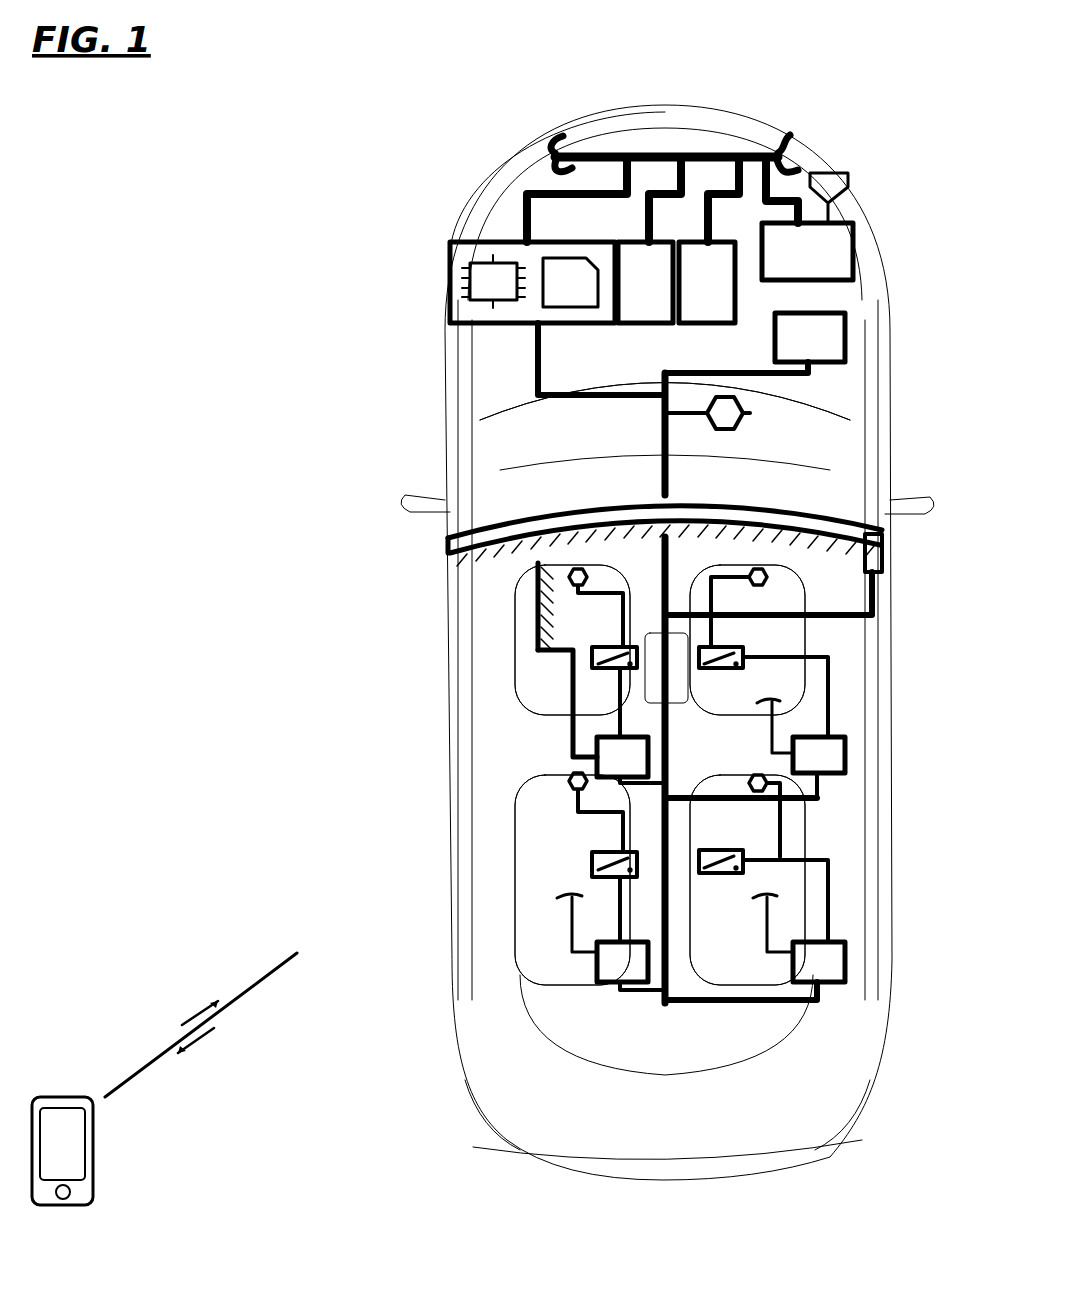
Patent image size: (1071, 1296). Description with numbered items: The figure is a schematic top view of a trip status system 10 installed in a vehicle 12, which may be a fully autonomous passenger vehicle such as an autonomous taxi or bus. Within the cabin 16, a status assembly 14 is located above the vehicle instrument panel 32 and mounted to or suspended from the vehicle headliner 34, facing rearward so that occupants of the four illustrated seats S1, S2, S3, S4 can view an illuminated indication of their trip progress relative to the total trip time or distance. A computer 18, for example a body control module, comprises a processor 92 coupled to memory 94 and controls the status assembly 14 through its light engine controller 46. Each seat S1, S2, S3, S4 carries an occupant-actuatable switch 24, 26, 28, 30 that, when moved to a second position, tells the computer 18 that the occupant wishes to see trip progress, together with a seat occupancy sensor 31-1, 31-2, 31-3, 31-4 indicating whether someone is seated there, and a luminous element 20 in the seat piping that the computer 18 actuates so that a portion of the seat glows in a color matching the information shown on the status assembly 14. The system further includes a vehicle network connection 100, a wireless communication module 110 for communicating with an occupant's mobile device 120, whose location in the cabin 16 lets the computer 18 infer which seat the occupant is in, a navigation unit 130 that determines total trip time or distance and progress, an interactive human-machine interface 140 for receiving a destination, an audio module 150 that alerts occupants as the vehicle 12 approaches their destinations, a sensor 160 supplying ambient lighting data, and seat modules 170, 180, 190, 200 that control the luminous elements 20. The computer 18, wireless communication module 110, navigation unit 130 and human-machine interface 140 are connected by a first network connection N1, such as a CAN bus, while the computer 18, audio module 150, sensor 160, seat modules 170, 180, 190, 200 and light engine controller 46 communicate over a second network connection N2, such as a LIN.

The trip status system 10 is at (375, 232).
The vehicle 12 is at (495, 155).
The status assembly 14 is at (625, 504).
The cabin 16 is at (556, 810).
The computer 18 is at (570, 240).
The luminous element 20 is at (529, 629).
The occupant-actuatable switch 24 is at (612, 647).
The occupant-actuatable switch 26 is at (730, 647).
The occupant-actuatable switch 28 is at (612, 852).
The occupant-actuatable switch 30 is at (733, 850).
The seat occupancy sensor 31-1 is at (583, 572).
The seat occupancy sensor 31-2 is at (763, 587).
The seat occupancy sensor 31-3 is at (578, 790).
The seat occupancy sensor 31-4 is at (748, 785).
The vehicle instrument panel 32 is at (755, 493).
The vehicle headliner 34 is at (504, 515).
The light engine controller 46 is at (884, 560).
The processor 92 is at (493, 281).
The memory 94 is at (570, 282).
The vehicle network connection 100 is at (673, 116).
The wireless communication module 110 is at (807, 218).
The mobile device 120 is at (95, 1179).
The navigation unit 130 is at (649, 240).
The human-machine interface 140 is at (709, 240).
The audio module 150 is at (755, 343).
The sensor 160 is at (752, 422).
The seat module 170 is at (631, 760).
The seat module 180 is at (801, 748).
The seat module 190 is at (631, 966).
The seat module 200 is at (755, 947).
The first network connection N1 is at (733, 150).
The second network connection N2 is at (553, 367).
The vehicle seat S1 is at (515, 681).
The vehicle seat S2 is at (820, 641).
The vehicle seat S3 is at (509, 852).
The vehicle seat S4 is at (820, 820).